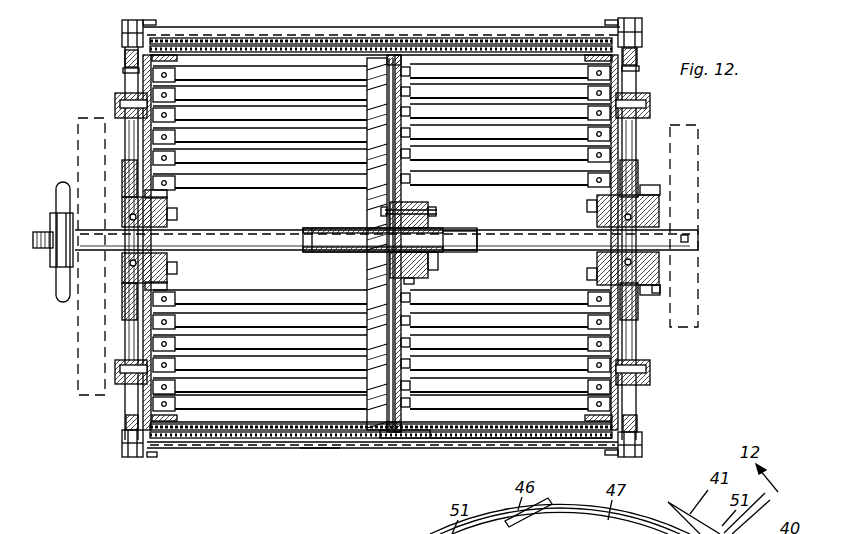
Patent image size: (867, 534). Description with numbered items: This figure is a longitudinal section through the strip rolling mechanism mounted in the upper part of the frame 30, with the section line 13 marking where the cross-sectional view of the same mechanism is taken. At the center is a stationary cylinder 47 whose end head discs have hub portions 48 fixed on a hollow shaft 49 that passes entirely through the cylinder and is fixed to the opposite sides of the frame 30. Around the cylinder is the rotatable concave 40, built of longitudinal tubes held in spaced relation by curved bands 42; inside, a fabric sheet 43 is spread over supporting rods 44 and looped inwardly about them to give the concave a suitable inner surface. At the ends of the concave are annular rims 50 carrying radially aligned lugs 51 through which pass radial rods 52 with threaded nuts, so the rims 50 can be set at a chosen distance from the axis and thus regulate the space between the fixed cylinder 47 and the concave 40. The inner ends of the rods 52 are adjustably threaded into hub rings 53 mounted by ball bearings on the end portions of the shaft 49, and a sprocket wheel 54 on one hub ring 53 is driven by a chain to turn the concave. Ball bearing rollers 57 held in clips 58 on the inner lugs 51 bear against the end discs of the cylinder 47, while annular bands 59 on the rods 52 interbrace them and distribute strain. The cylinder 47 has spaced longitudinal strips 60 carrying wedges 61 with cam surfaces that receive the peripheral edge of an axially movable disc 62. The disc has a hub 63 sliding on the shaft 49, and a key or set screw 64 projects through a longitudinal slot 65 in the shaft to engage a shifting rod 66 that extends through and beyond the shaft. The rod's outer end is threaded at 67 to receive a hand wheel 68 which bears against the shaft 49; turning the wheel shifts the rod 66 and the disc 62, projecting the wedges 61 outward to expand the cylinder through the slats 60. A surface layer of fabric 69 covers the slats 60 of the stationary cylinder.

The section line 13- 13 is at (245, 80).
The frame 30 is at (78, 362).
The concave 40 is at (381, 224).
The curved bands 42 is at (145, 456).
The fabric 43 is at (355, 441).
The rods 44 is at (322, 450).
The stationary cylinder 47 is at (172, 325).
The hub portions 48 is at (170, 223).
The hollow shaft 49 is at (690, 250).
The annular rims 50 is at (140, 62).
The lugs 51 is at (122, 32).
The radial rods 52 is at (130, 147).
The hub rings 53 is at (128, 192).
The sprocket wheel 54 is at (662, 292).
The ball bearing rollers 57 is at (118, 118).
The clips 58 is at (117, 107).
The annular bands 59 is at (125, 72).
The longitudinal strips 60 is at (496, 401).
The wedges 61 is at (372, 318).
The disc 62 is at (386, 360).
The hub 63 is at (425, 203).
The key or set screw 64 is at (412, 282).
The longitudinal slot 65 is at (430, 262).
The shifting rod 66 is at (358, 240).
The threaded portion 67 is at (40, 250).
The hand wheel 68 is at (60, 280).
The fabric 69 is at (408, 430).